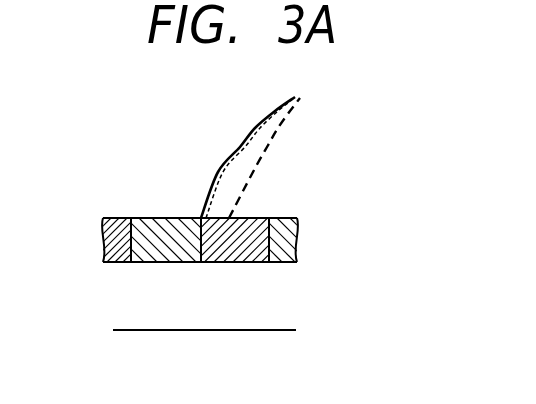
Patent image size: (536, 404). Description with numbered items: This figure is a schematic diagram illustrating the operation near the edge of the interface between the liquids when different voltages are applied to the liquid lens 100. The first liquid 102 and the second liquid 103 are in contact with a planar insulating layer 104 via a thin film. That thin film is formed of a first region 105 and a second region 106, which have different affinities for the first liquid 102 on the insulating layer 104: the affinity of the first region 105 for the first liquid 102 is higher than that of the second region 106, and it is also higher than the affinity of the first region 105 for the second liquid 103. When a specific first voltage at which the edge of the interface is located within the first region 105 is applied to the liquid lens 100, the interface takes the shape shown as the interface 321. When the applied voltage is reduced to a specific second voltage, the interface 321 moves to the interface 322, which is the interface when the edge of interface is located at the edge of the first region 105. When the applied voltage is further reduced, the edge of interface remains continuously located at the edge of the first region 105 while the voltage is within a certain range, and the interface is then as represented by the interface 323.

The liquid lens 100 is at (100, 112).
The first liquid 102 is at (273, 187).
The second liquid 103 is at (147, 188).
The planar insulating layer 104 is at (280, 272).
The first region 105 is at (233, 253).
The second region 106 is at (157, 253).
The interface 321 is at (288, 118).
The interface 322 is at (243, 148).
The interface 323 is at (223, 172).